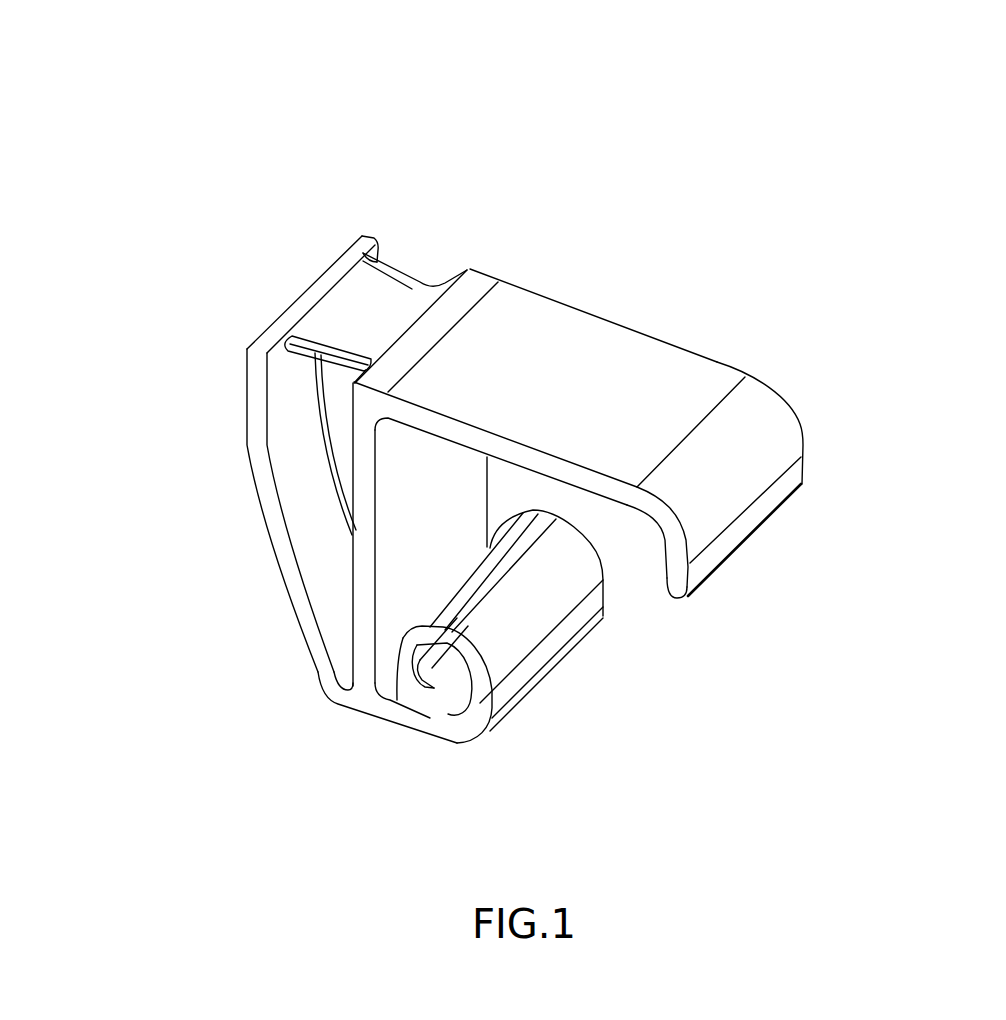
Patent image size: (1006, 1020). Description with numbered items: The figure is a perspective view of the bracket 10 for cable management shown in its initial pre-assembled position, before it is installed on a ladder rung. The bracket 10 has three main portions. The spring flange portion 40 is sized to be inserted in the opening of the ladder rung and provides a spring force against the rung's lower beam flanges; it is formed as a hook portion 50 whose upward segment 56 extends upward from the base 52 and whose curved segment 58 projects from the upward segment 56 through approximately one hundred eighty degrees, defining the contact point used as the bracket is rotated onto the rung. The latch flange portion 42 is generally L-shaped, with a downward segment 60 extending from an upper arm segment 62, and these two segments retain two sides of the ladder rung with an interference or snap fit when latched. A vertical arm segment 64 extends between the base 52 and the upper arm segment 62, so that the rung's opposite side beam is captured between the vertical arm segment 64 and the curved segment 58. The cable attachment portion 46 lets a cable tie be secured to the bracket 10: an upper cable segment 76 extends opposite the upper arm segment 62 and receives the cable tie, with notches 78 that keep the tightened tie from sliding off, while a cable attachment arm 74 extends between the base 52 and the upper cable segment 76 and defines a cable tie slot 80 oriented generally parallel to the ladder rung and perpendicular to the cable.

The bracket 10 is at (860, 124).
The spring flange portion 40 is at (523, 600).
The latch flange portion 42 is at (717, 359).
The cable attachment portion 46 is at (383, 278).
The hook portion 50 is at (333, 700).
The base 52 is at (363, 620).
The upward segment 56 is at (480, 703).
The curved segment 58 is at (407, 634).
The downward segment 60 is at (727, 537).
The upper arm segment 62 is at (550, 298).
The vertical arm segment 64 is at (397, 517).
The cable attachment arm 74 is at (307, 622).
The upper cable segment 76 is at (335, 305).
The notches 78 is at (418, 279).
The cable tie slot 80 is at (338, 405).